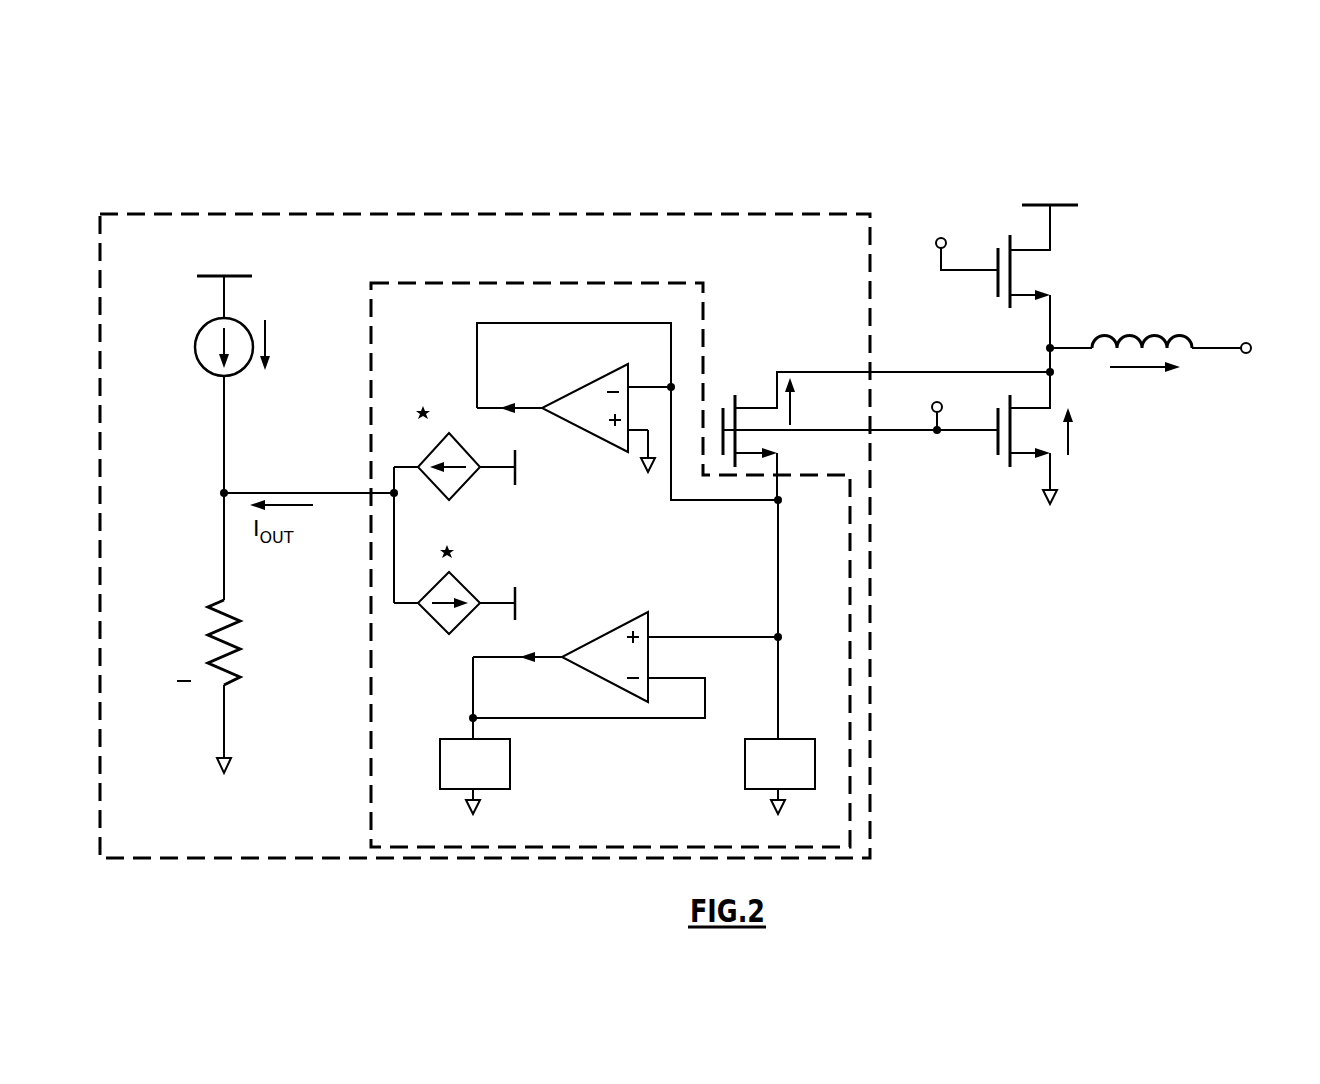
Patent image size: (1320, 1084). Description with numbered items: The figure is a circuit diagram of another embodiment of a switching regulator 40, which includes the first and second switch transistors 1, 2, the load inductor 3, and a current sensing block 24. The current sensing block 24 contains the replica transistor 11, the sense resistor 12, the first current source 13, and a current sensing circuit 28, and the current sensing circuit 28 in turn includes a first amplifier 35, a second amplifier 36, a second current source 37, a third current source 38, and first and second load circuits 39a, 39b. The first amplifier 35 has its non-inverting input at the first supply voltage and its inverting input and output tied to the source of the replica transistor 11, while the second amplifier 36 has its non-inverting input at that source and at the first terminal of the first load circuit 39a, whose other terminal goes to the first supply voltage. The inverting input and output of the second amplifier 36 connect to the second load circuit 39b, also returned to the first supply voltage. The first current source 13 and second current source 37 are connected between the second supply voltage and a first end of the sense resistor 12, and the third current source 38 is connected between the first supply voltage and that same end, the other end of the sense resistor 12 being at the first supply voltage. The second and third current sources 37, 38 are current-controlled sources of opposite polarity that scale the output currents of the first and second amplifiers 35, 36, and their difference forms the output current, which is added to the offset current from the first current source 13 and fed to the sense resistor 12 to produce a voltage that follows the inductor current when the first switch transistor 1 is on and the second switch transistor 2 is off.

The first switch transistor 1 is at (997, 445).
The second switch transistor 2 is at (997, 284).
The load inductor 3 is at (1158, 338).
The replica transistor 11 is at (723, 408).
The sense resistor 12 is at (234, 645).
The first current source 13 is at (204, 331).
The current sensing block 24 is at (150, 214).
The current sensing circuit 28 is at (540, 283).
The first amplifier 35 is at (613, 451).
The second amplifier 36 is at (622, 622).
The second current source 37 is at (462, 487).
The third current source 38 is at (434, 620).
The first load circuit 39a is at (745, 765).
The second load circuit 39b is at (440, 765).
The switching regulator 40 is at (1192, 134).